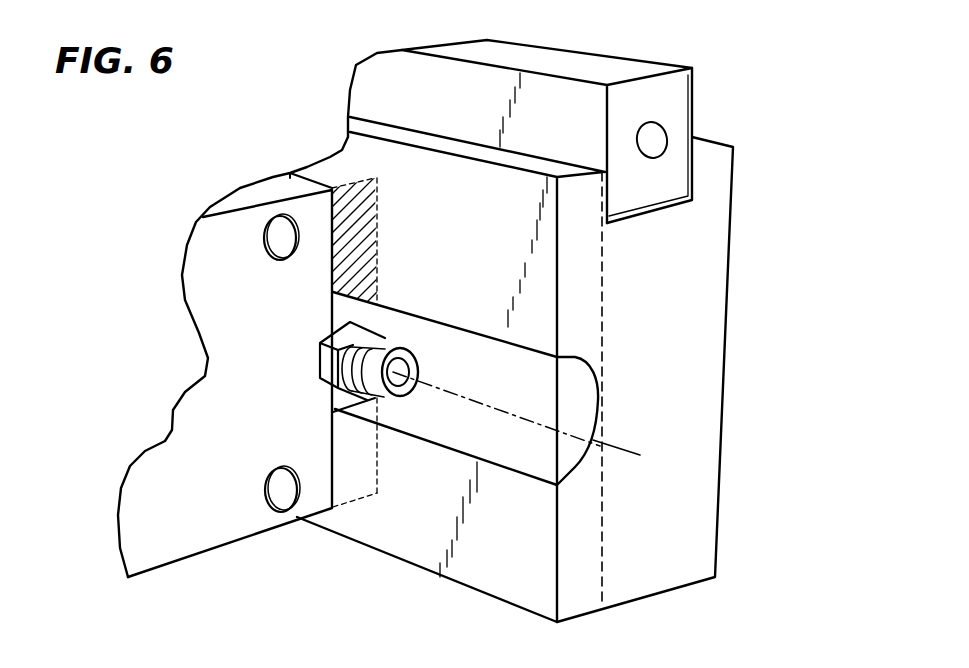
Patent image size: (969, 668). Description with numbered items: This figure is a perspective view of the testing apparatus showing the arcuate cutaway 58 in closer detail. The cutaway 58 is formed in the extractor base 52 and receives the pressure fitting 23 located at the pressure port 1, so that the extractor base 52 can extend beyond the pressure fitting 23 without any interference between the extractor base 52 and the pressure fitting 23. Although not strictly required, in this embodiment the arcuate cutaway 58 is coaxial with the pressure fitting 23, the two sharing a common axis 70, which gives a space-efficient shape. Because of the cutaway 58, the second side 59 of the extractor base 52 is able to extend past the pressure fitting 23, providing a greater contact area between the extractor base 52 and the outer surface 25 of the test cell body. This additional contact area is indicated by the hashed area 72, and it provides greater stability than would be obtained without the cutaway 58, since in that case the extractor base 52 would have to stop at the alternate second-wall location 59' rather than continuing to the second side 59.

The pressure port 1 is at (306, 388).
The pressure fitting 23 is at (382, 340).
The outer surface 25 is at (284, 343).
The extractor base 52 is at (733, 190).
The arcuate cutaway 58 is at (574, 392).
The second side 59 is at (494, 331).
The alternate second-wall location 59' is at (649, 389).
The axis 70 is at (450, 393).
The hashed area 72 is at (378, 197).